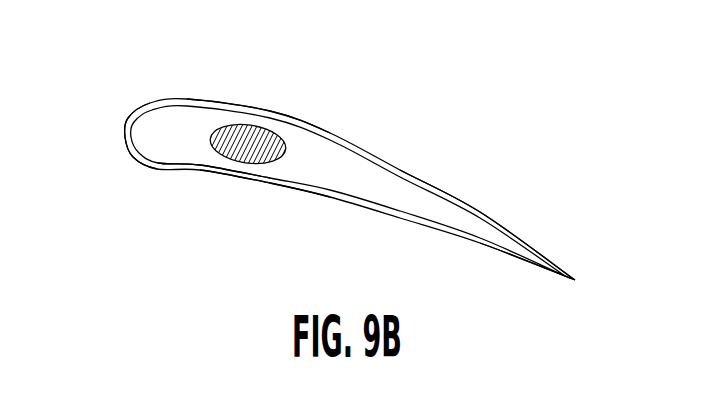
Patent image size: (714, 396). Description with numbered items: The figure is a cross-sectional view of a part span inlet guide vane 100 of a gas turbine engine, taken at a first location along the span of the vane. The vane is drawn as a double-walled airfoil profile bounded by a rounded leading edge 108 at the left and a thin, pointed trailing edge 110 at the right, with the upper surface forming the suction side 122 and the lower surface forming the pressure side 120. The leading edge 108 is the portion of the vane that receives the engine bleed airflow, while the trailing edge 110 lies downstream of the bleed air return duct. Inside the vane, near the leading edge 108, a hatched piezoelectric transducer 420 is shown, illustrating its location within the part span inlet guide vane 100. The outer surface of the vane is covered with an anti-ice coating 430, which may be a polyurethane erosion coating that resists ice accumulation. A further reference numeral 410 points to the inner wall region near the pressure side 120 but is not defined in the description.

The part span inlet guide vane 100 is at (380, 91).
The leading edge 108 is at (121, 109).
The trailing edge 110 is at (581, 276).
The suction side 122 is at (309, 99).
The pressure side 120 is at (254, 211).
The anti-ice coating 430 is at (473, 210).
The inner surface of airfoil wall 410 is at (206, 156).
The piezoelectric transducer 420 is at (253, 138).